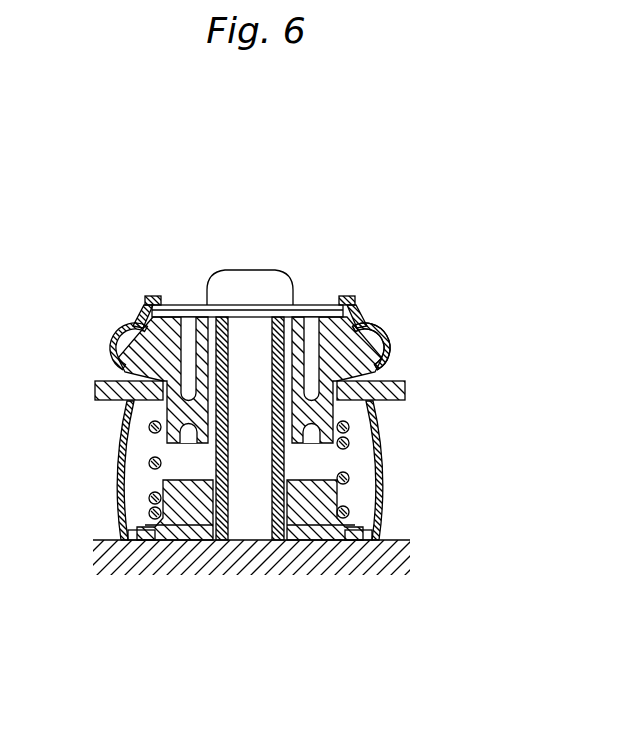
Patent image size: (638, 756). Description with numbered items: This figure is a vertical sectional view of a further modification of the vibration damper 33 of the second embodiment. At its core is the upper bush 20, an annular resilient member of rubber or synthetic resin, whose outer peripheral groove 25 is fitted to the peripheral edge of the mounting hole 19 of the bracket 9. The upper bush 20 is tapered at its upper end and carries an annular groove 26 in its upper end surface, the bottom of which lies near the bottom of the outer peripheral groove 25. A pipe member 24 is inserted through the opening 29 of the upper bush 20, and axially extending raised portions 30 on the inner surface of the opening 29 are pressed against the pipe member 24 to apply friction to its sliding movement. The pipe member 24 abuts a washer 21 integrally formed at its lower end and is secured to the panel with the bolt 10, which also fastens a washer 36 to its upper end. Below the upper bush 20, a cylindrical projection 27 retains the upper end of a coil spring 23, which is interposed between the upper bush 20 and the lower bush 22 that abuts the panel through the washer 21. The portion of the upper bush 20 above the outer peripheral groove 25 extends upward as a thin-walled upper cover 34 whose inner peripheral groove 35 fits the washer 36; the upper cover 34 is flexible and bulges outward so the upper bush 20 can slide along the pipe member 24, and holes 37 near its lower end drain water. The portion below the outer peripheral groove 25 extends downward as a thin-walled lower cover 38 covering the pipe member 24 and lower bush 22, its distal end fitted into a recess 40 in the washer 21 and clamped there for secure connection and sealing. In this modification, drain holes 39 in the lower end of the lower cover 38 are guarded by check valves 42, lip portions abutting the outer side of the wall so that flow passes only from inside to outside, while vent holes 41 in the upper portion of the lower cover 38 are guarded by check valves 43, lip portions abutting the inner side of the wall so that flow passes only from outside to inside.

The bracket 9 is at (396, 384).
The bolt 10 is at (258, 290).
The mounting hole 19 is at (125, 366).
The upper bush 20 is at (150, 335).
The washer 21 is at (177, 541).
The lower bush 22 is at (163, 487).
The coil spring 23 is at (390, 477).
The pipe member 24 is at (281, 317).
The outer peripheral groove 25 is at (118, 375).
The annular groove 26 is at (198, 348).
The cylindrical projection 27 is at (117, 470).
The opening 29 is at (228, 340).
The raised portions 30 is at (360, 323).
The vibration damper 33 is at (370, 266).
The upper cover 34 is at (386, 333).
The inner peripheral groove 35 is at (342, 298).
The washer 36 is at (308, 305).
The holes 37 is at (117, 350).
The lower cover 38 is at (380, 507).
The drain holes 39 is at (122, 507).
The recess 40 is at (352, 530).
The vent holes 41 is at (120, 460).
The check valve 42 is at (128, 534).
The check valve 43 is at (127, 430).